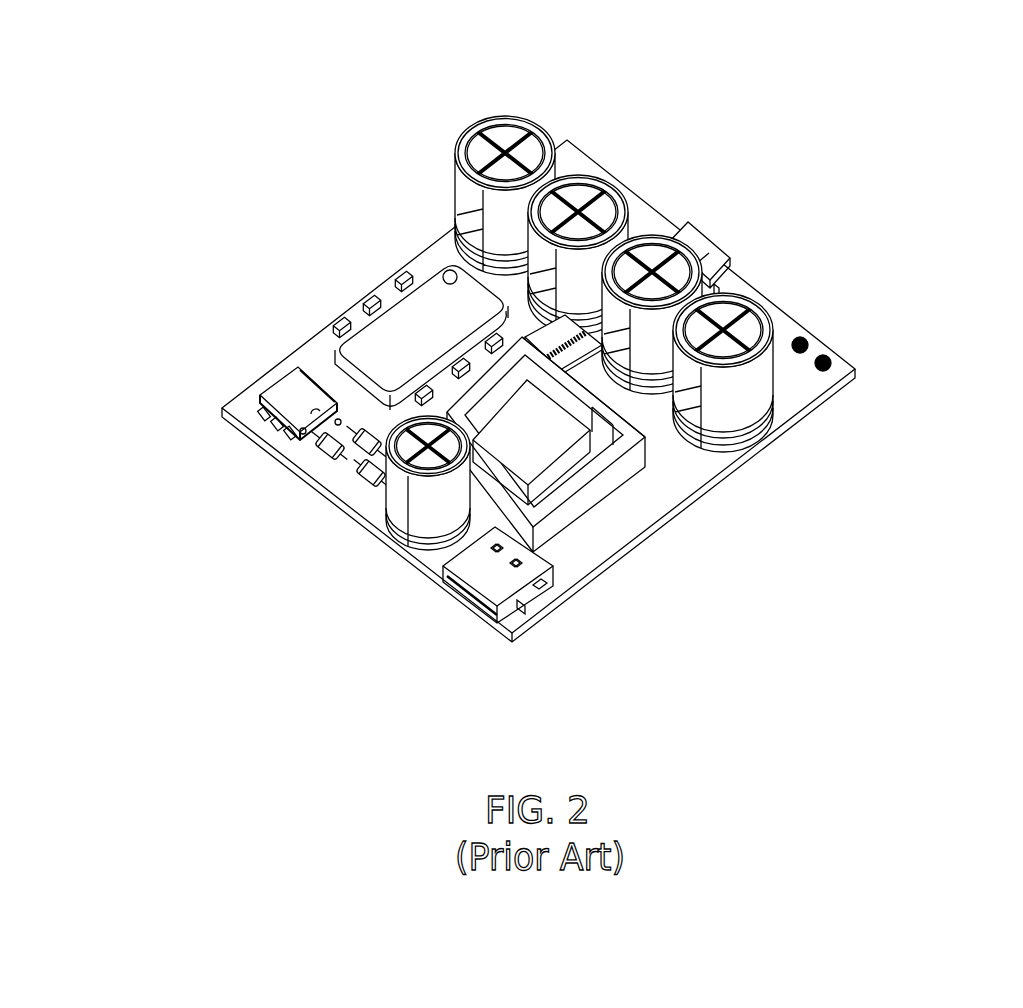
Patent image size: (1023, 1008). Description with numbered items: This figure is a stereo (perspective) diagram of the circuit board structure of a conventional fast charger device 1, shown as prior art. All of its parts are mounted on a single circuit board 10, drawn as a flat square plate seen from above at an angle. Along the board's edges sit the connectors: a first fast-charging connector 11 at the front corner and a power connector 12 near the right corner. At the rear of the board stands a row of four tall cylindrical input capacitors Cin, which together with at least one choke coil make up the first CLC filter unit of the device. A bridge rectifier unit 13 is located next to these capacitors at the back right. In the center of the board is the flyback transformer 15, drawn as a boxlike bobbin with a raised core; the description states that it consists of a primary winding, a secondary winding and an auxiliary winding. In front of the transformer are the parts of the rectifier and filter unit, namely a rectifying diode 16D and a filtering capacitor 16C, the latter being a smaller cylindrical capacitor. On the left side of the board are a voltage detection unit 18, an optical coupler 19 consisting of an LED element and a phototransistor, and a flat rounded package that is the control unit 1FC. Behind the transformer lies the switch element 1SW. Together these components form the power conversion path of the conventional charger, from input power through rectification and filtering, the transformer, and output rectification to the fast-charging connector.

The conventional fast charger device 1 is at (212, 151).
The circuit board 10 is at (860, 373).
The first fast-charging connector 11 is at (470, 590).
The power connector 12 is at (825, 356).
The bridge rectifier unit 13 is at (700, 245).
The flyback transformer 15 is at (577, 460).
The filtering capacitor 16C is at (392, 503).
The rectifying diode 16D is at (367, 445).
The voltage detection unit 18 is at (365, 453).
The optical coupler 19 is at (290, 393).
The control unit 1FC is at (367, 323).
The switch element 1SW is at (592, 366).
The input capacitors Cin is at (568, 190).